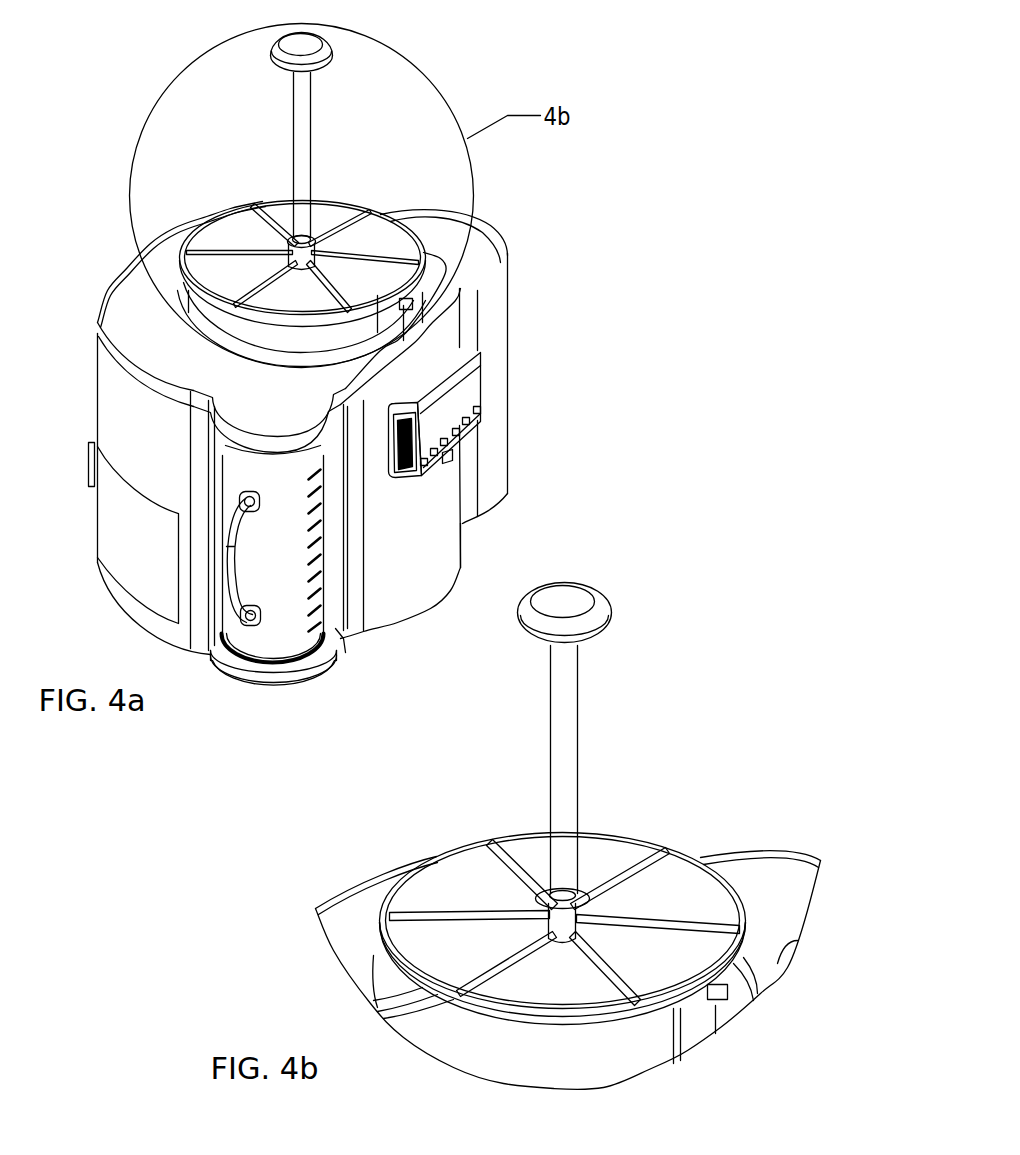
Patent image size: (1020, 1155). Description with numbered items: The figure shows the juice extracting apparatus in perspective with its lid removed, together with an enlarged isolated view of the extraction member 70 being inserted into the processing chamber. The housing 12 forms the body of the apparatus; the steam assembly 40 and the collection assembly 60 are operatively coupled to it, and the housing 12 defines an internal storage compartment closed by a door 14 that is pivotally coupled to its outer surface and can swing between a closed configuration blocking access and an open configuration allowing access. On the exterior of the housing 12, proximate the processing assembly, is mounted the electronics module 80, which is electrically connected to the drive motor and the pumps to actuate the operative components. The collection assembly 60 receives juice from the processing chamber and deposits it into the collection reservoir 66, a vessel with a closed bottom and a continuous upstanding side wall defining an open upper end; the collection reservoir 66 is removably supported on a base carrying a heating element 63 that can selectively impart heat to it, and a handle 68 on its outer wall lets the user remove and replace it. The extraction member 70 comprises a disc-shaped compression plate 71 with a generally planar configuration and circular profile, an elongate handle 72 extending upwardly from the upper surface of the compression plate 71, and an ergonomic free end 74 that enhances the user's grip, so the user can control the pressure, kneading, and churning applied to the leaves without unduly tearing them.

In FIG. 4A, the housing 12 is at (76, 386).
In FIG. 4A, the door 14 is at (112, 525).
In FIG. 4A, the steam assembly 40 is at (531, 290).
In FIG. 4B, the steam assembly 40 is at (568, 970).
In FIG. 4A, the collection assembly 60 is at (286, 716).
In FIG. 4A, the heating element 63 is at (325, 654).
In FIG. 4A, the collection reservoir 66 is at (257, 648).
In FIG. 4A, the handle 68 is at (228, 609).
In FIG. 4A, the extraction member 70 is at (308, 167).
In FIG. 4B, the extraction member 70 is at (563, 788).
In FIG. 4A, the compression plate 71 is at (390, 231).
In FIG. 4B, the compression plate 71 is at (612, 842).
In FIG. 4A, the elongate handle 72 is at (301, 118).
In FIG. 4B, the elongate handle 72 is at (564, 705).
In FIG. 4A, the free end 74 is at (306, 44).
In FIG. 4B, the free end 74 is at (570, 595).
In FIG. 4A, the electronics module 80 is at (502, 388).